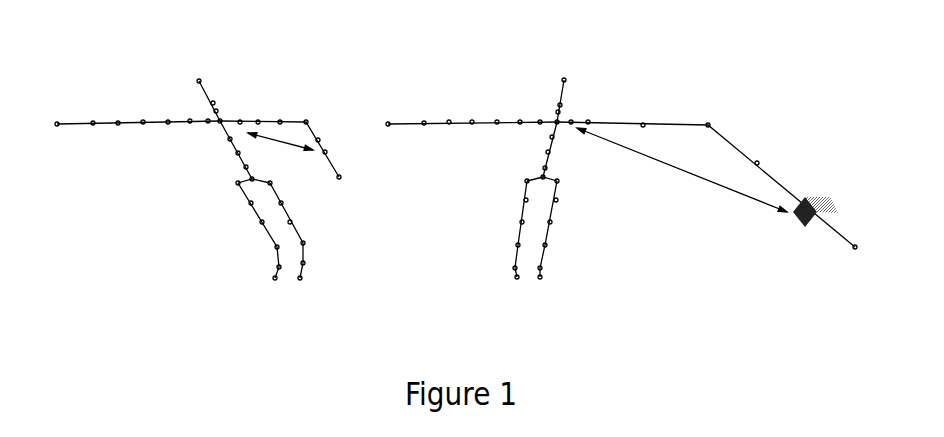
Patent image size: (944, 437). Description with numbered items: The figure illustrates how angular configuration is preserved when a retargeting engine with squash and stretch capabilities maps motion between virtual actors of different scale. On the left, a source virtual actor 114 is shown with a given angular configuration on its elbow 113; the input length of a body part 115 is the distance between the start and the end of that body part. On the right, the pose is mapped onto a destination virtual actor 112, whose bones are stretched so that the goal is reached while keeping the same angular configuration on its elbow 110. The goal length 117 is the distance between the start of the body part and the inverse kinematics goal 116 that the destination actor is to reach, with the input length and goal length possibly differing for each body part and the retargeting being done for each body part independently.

The elbow 110 is at (693, 93).
The destination virtual actor 112 is at (468, 80).
The elbow 113 is at (282, 75).
The source virtual actor 114 is at (125, 80).
The input length of a body part 115 is at (318, 163).
The racket head / ball object 116 is at (811, 167).
The goal length 117 is at (710, 195).